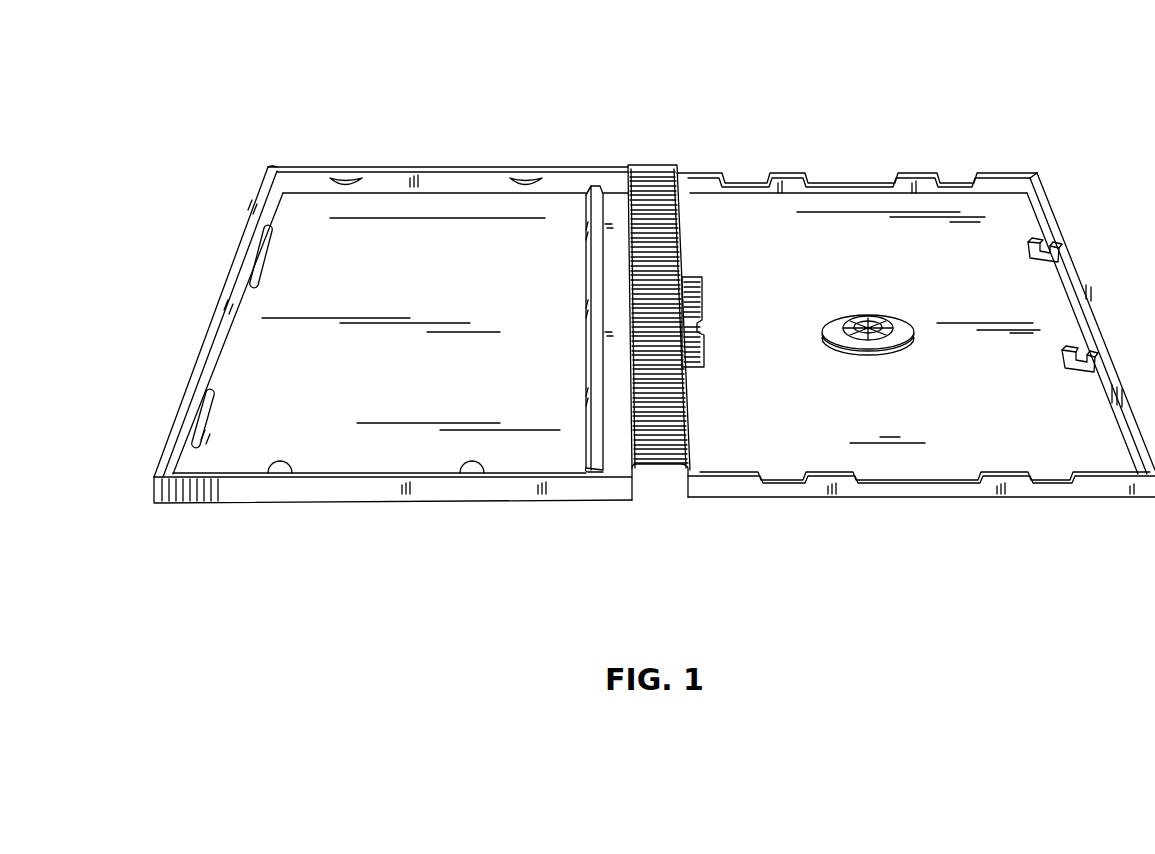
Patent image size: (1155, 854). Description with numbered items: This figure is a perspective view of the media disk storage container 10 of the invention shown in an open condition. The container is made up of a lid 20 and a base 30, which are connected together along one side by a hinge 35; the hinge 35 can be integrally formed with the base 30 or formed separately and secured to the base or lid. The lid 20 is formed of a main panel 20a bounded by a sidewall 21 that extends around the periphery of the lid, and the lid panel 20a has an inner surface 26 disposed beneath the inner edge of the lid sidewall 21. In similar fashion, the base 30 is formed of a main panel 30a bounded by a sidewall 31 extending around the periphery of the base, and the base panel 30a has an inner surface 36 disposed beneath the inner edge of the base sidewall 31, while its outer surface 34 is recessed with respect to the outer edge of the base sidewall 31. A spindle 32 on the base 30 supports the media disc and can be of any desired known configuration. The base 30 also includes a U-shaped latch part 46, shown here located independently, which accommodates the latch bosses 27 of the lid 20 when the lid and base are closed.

The storage case 10 is at (857, 135).
The lid 20 is at (330, 490).
The main panel 20a is at (430, 278).
The sidewall 21 is at (432, 183).
The inner surface 26 is at (318, 392).
The latch bosses 27 is at (270, 257).
The base 30 is at (1012, 178).
The main panel 30a is at (790, 268).
The sidewall 31 is at (780, 192).
The spindle 32 is at (870, 320).
The outer surface 34 is at (922, 493).
The hinge 35 is at (660, 470).
The inner surface 36 is at (1000, 428).
The U-shaped latch part 46 is at (1048, 240).